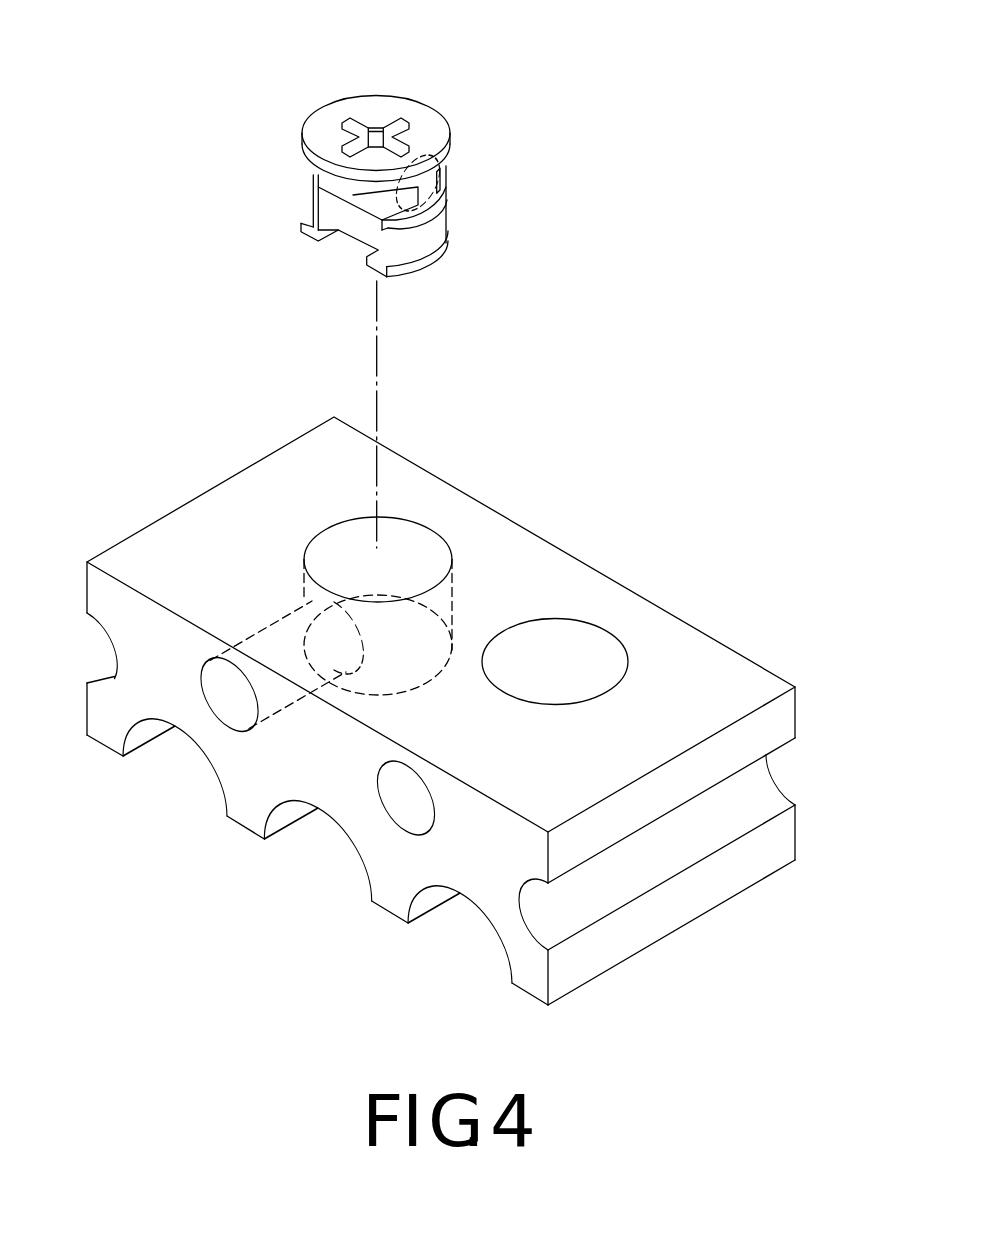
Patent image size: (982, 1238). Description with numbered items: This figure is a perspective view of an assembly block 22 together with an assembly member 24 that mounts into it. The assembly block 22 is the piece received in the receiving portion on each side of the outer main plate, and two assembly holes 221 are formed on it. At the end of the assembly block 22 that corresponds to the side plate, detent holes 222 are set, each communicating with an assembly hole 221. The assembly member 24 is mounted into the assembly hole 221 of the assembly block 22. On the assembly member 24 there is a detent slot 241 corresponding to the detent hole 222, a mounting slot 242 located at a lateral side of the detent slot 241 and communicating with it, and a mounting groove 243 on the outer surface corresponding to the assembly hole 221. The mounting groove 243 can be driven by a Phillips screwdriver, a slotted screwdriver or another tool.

The assembly block 22 is at (687, 907).
The assembly hole 221 is at (408, 547).
The detent hole 222 is at (223, 705).
The assembly member 24 is at (435, 175).
The detent slot 241 is at (362, 224).
The mounting slot 242 is at (437, 222).
The mounting groove 243 is at (371, 128).